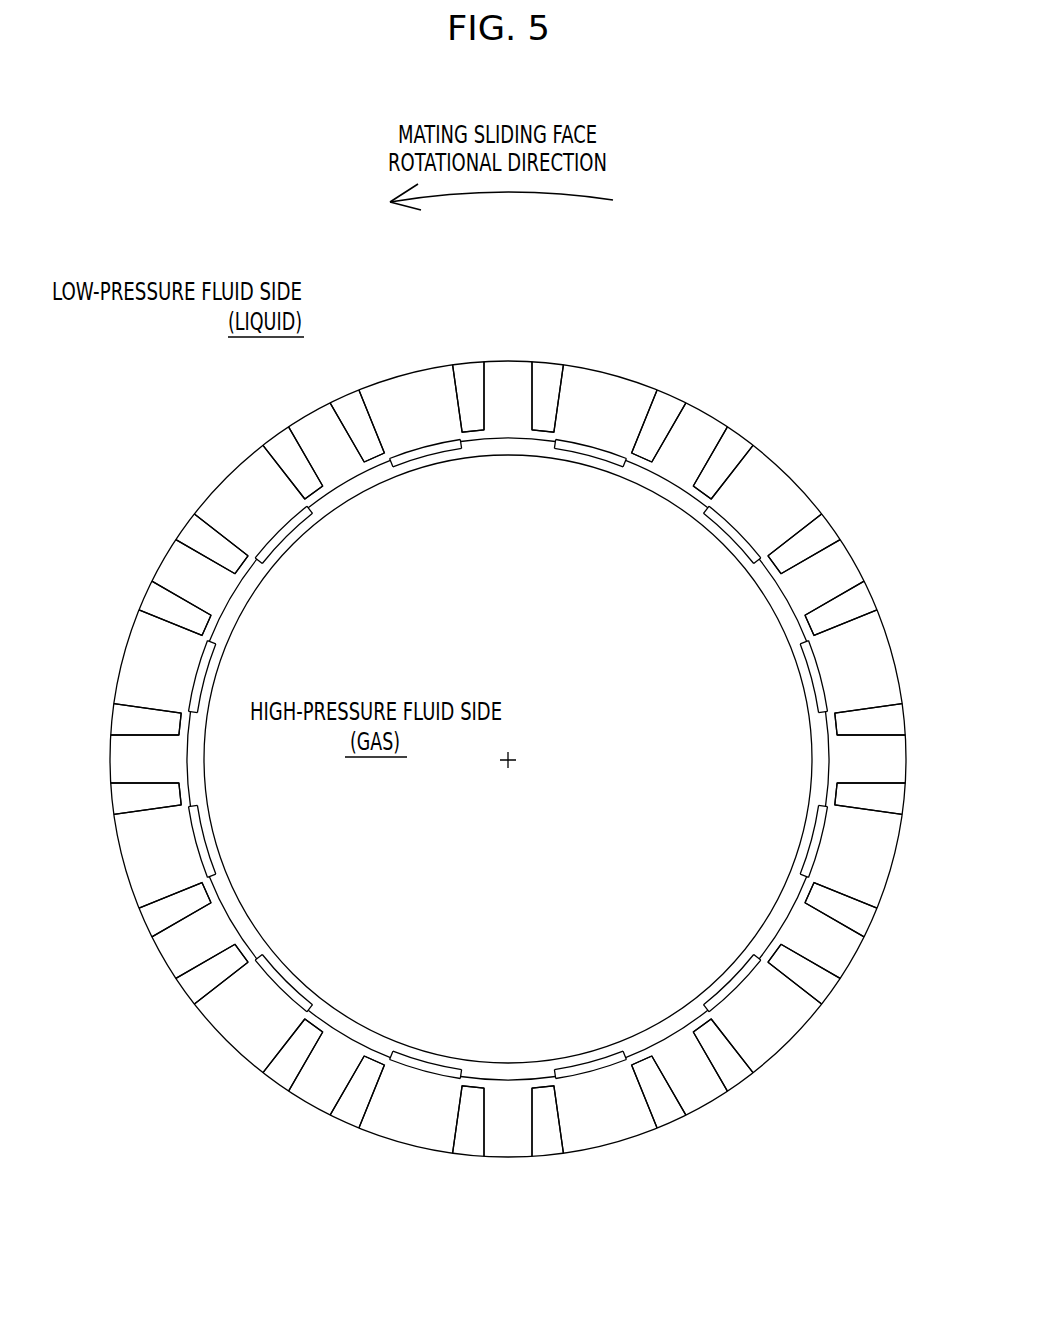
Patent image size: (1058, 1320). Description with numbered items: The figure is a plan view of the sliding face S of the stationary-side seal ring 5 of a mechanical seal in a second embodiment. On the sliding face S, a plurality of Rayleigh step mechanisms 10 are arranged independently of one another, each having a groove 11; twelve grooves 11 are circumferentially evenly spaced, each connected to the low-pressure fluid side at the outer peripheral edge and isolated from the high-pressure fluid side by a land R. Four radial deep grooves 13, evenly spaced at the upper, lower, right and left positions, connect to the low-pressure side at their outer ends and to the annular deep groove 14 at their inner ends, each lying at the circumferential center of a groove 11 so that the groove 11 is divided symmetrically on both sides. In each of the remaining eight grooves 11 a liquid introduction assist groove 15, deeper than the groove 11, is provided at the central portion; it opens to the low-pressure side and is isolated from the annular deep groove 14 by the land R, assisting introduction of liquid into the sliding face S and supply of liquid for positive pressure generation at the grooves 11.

The stationary-side seal ring 5 is at (818, 501).
The sliding face S is at (608, 390).
The land R is at (410, 398).
The Rayleigh step mechanism 10 is at (475, 361).
The groove 11 is at (445, 380).
The radial deep groove 13 is at (515, 380).
The annular deep groove 14 is at (461, 442).
The liquid introduction assist groove 15 is at (707, 433).